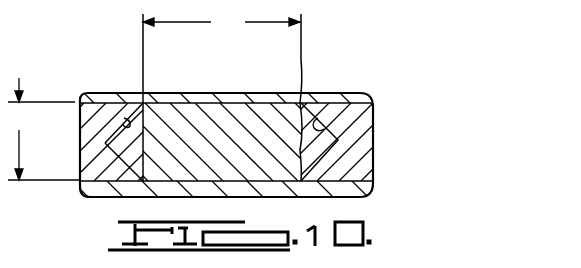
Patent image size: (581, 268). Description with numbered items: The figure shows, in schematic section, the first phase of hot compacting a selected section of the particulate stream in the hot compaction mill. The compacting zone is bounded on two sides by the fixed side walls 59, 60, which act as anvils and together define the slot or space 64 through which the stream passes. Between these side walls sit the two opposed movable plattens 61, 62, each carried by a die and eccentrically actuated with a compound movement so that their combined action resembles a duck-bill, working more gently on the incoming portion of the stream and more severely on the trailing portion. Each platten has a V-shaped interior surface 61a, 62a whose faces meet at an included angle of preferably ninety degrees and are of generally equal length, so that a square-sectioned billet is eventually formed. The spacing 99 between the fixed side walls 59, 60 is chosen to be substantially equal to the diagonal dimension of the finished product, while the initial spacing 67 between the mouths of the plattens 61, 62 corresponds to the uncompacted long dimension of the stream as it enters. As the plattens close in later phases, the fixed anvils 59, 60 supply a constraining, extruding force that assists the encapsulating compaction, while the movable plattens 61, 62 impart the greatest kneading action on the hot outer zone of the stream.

The side wall 59 is at (262, 93).
The side wall 60 is at (107, 193).
The platten 61 is at (362, 140).
The interior surface 61a is at (318, 118).
The platten 62 is at (85, 145).
The interior surface 62a is at (124, 118).
The slot 64 is at (200, 95).
The initial spacing 67 is at (221, 25).
The spacing 99 is at (43, 129).